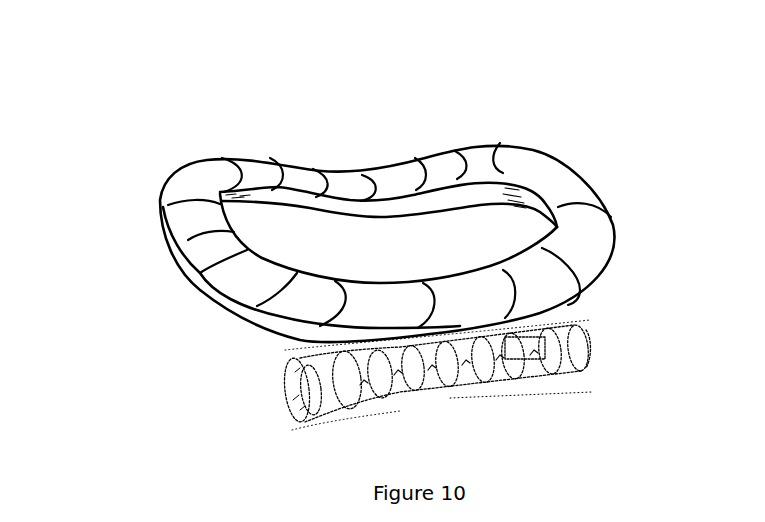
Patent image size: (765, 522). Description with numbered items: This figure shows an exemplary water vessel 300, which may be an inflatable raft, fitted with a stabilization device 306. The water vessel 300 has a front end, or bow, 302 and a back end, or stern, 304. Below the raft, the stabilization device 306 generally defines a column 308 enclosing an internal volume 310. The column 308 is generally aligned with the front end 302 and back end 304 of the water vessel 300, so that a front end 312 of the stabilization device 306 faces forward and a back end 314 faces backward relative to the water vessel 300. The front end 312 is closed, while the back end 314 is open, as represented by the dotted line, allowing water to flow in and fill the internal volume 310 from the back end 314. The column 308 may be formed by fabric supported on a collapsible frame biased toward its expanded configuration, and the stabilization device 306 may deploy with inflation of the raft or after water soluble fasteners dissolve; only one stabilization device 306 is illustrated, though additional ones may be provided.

The water vessel 300 is at (270, 97).
The front end (bow) 302 is at (113, 211).
The back end (stern) 304 is at (633, 154).
The stabilization device 306 is at (325, 436).
The column 308 is at (503, 384).
The internal volume 310 is at (540, 357).
The front end of the stabilization device 312 is at (272, 381).
The back end of the stabilization device 314 is at (615, 328).